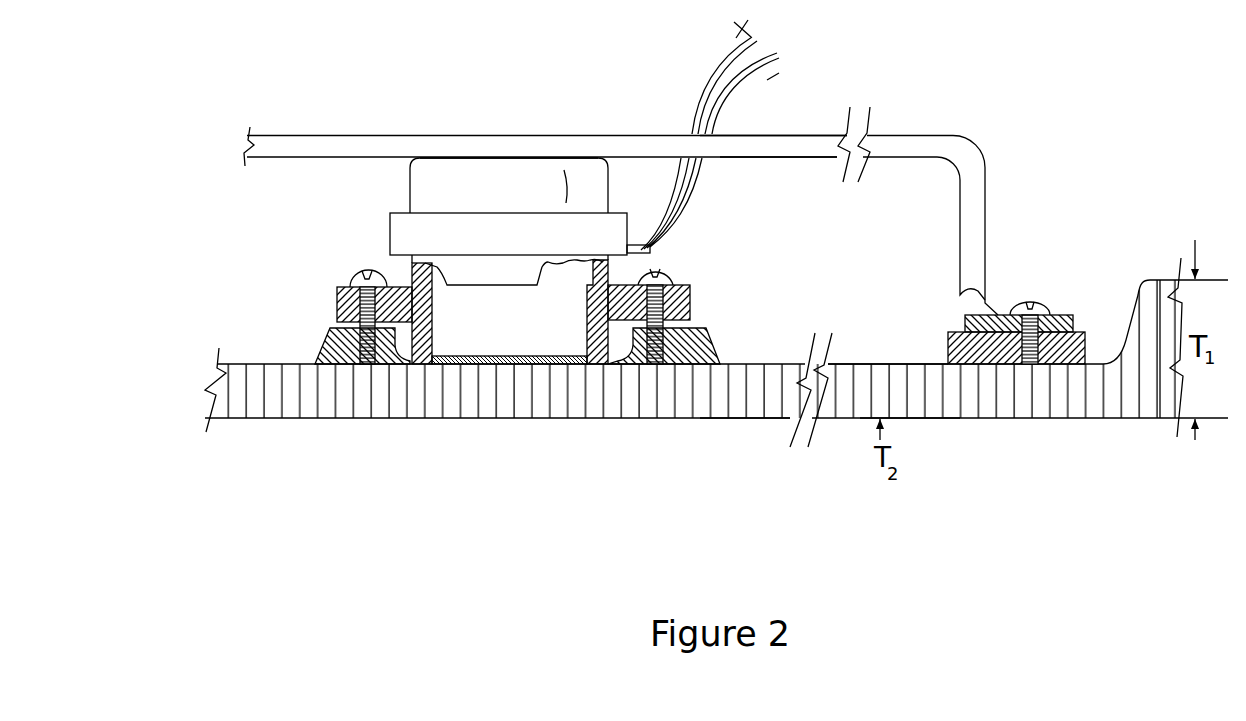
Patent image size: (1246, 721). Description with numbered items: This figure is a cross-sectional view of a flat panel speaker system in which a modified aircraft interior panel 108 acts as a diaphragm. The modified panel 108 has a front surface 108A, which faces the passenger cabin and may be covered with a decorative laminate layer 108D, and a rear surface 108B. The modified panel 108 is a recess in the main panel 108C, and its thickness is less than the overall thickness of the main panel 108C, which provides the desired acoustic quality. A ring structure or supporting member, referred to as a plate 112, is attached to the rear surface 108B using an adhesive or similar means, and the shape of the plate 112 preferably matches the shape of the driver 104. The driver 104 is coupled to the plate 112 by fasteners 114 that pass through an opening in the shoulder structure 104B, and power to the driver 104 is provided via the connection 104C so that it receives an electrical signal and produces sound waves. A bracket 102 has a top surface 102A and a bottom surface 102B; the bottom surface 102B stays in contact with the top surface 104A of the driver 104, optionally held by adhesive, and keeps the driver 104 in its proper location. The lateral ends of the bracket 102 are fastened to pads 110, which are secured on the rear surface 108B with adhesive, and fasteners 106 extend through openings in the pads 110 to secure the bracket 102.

The bracket 102 is at (934, 150).
The top surface of bracket 102A is at (812, 133).
The bottom surface of bracket 102B is at (788, 164).
The driver 104 is at (578, 186).
The top surface of driver 104A is at (514, 152).
The shoulder structure 104B is at (689, 310).
The connection 104C is at (735, 130).
The fasteners 106 is at (1034, 305).
The modified panel 108 is at (632, 398).
The front surface 108A is at (916, 420).
The rear surface 108B is at (880, 363).
The main panel 108C is at (1146, 412).
The decorative laminate layer 108D is at (737, 415).
The pads 110 is at (971, 368).
The plate 112 is at (308, 347).
The fasteners 114 is at (356, 283).